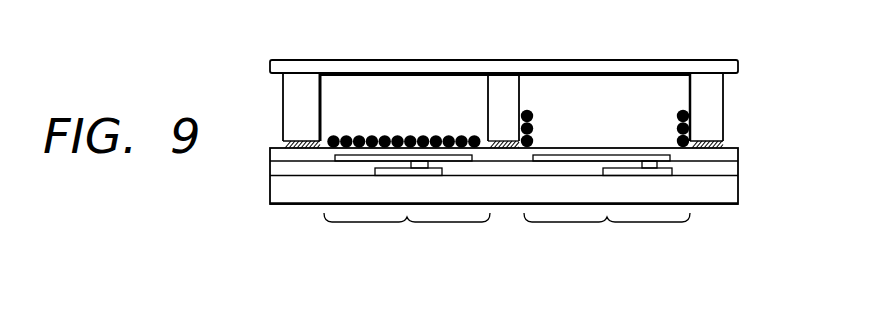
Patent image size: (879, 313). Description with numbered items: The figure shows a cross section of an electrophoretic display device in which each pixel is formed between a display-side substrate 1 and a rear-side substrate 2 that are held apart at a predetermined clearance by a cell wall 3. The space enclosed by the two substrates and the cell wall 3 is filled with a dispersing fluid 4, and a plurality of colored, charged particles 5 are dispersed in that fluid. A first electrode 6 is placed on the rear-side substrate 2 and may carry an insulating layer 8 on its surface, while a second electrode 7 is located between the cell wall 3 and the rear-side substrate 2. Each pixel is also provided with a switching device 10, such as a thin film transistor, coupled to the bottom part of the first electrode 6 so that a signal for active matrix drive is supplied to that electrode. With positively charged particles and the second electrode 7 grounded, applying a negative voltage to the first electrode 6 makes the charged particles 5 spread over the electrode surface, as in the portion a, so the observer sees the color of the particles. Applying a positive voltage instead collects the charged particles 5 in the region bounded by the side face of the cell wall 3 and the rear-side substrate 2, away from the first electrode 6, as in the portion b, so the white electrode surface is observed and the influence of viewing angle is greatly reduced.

The display-side substrate 1 is at (700, 66).
The rear-side substrate 2 is at (722, 186).
The cell wall 3 is at (708, 100).
The dispersing fluid 4 is at (457, 97).
The colored, charged particles 5 is at (377, 135).
The first electrode 6 is at (622, 155).
The second electrode 7 is at (303, 141).
The insulating layer 8 is at (722, 155).
The switching device 10 is at (663, 176).
The portion a is at (407, 234).
The portion b is at (607, 234).